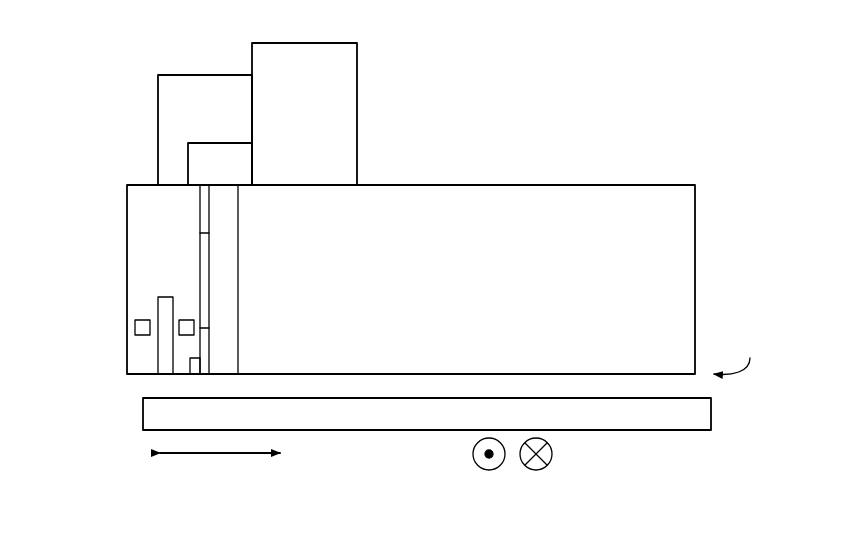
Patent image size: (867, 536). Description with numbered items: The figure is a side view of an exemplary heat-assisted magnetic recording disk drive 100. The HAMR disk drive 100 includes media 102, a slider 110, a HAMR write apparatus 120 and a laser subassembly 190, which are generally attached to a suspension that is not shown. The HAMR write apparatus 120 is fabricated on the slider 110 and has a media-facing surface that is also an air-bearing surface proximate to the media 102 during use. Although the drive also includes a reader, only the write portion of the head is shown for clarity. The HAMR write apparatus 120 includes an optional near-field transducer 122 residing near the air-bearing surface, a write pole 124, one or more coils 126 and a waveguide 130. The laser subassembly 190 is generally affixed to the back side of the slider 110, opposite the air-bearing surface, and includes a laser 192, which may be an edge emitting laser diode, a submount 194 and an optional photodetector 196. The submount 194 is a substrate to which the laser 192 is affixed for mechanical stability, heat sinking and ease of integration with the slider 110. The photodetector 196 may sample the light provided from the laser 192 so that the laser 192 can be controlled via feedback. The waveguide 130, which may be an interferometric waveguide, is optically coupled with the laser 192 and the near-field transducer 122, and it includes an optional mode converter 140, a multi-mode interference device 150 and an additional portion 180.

The HAMR disk drive 100 is at (358, 23).
The media 102 is at (143, 418).
The slider 110 is at (696, 248).
The HAMR write apparatus 120 is at (238, 209).
The near-field transducer 122 is at (195, 375).
The write pole 124 is at (158, 360).
The coil 126 is at (187, 320).
The waveguide 130 is at (162, 240).
The mode converter 140 is at (198, 217).
The multi-mode interference device 150 is at (209, 273).
The additional portion 180 is at (209, 351).
The laser subassembly 190 is at (290, 109).
The laser 192 is at (205, 130).
The submount 194 is at (304, 114).
The photodetector 196 is at (220, 164).